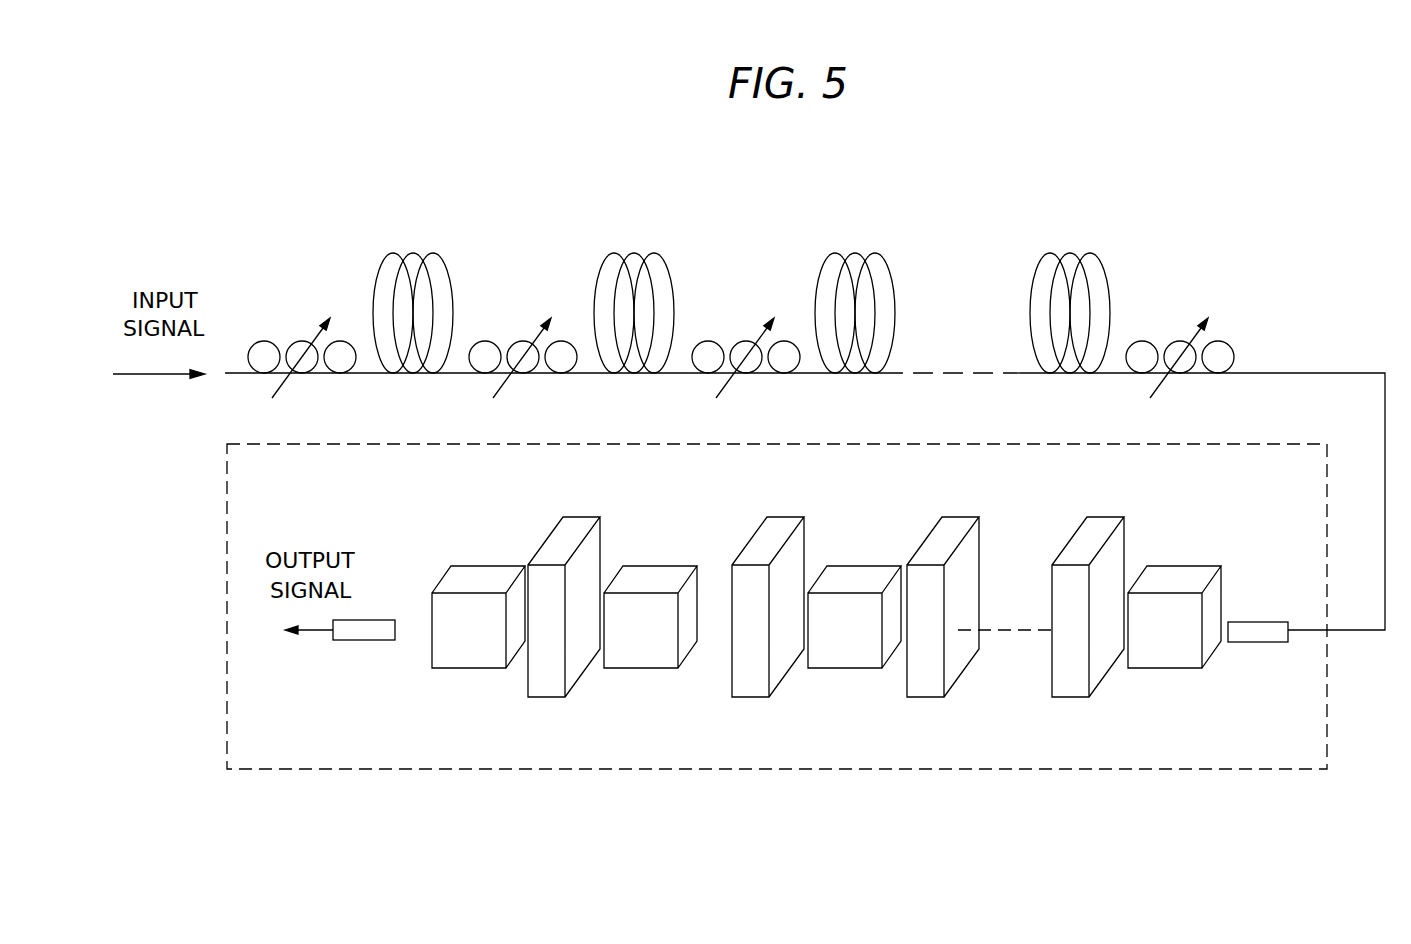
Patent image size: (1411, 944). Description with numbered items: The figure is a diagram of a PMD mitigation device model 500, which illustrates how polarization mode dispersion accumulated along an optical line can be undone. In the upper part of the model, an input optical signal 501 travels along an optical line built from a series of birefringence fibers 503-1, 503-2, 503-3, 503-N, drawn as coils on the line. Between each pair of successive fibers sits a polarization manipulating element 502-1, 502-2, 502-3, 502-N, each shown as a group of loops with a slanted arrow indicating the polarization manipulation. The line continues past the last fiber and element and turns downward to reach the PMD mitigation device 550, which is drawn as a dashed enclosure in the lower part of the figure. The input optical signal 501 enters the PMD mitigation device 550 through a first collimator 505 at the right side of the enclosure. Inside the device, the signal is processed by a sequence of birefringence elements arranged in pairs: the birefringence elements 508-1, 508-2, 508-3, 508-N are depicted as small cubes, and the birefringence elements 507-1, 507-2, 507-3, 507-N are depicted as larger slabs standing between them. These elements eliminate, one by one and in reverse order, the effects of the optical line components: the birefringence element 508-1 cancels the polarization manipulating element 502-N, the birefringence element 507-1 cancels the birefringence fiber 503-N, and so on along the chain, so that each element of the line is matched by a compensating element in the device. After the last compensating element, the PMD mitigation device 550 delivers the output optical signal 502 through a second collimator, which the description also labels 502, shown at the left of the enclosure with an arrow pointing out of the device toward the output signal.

The PMD mitigation device model 500 is at (1278, 839).
The input optical signal 501 is at (158, 376).
The output optical signal 502 is at (365, 643).
The polarization manipulating element 502-1 is at (303, 341).
The polarization manipulating element 502-2 is at (530, 341).
The polarization manipulating element 502-3 is at (751, 341).
The polarization manipulating element 502-N is at (1189, 341).
The birefringence fiber 503-1 is at (413, 256).
The birefringence fiber 503-2 is at (634, 256).
The birefringence fiber 503-3 is at (855, 256).
The birefringence fiber 503-N is at (1070, 256).
The first collimator 505 is at (1232, 643).
The birefringence element 507-1 is at (600, 553).
The birefringence element 507-2 is at (804, 553).
The birefringence element 507-3 is at (979, 520).
The birefringence element 507-N is at (1124, 552).
The birefringence element 508-1 is at (469, 668).
The birefringence element 508-2 is at (641, 668).
The birefringence element 508-3 is at (851, 668).
The birefringence element 508-N is at (1168, 668).
The PMD mitigation device 550 is at (268, 770).